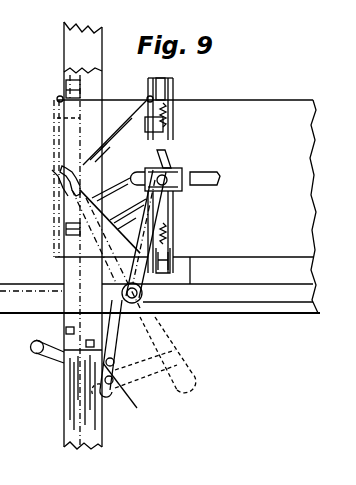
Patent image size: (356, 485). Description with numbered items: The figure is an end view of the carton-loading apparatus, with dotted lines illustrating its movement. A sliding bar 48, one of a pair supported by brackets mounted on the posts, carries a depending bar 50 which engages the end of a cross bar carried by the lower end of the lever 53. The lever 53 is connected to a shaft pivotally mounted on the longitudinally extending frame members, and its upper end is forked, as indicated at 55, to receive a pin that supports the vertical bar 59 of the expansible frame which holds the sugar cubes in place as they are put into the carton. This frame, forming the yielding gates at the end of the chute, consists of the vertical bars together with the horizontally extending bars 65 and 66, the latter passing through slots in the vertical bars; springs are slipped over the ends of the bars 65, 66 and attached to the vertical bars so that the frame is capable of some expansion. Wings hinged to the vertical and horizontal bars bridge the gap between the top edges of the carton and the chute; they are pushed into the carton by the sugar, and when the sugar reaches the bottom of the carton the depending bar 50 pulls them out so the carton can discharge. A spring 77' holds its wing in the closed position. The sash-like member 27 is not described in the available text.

The window sash 27 is at (116, 141).
The spring 77' is at (91, 180).
The horizontally extending bar 65 is at (176, 81).
The vertical bar 59 is at (173, 141).
The fork 55 is at (183, 160).
The horizontally extending bar 66 is at (176, 256).
The sliding bar 48 is at (241, 315).
The lever 53 is at (137, 331).
The depending bar 50 is at (118, 392).